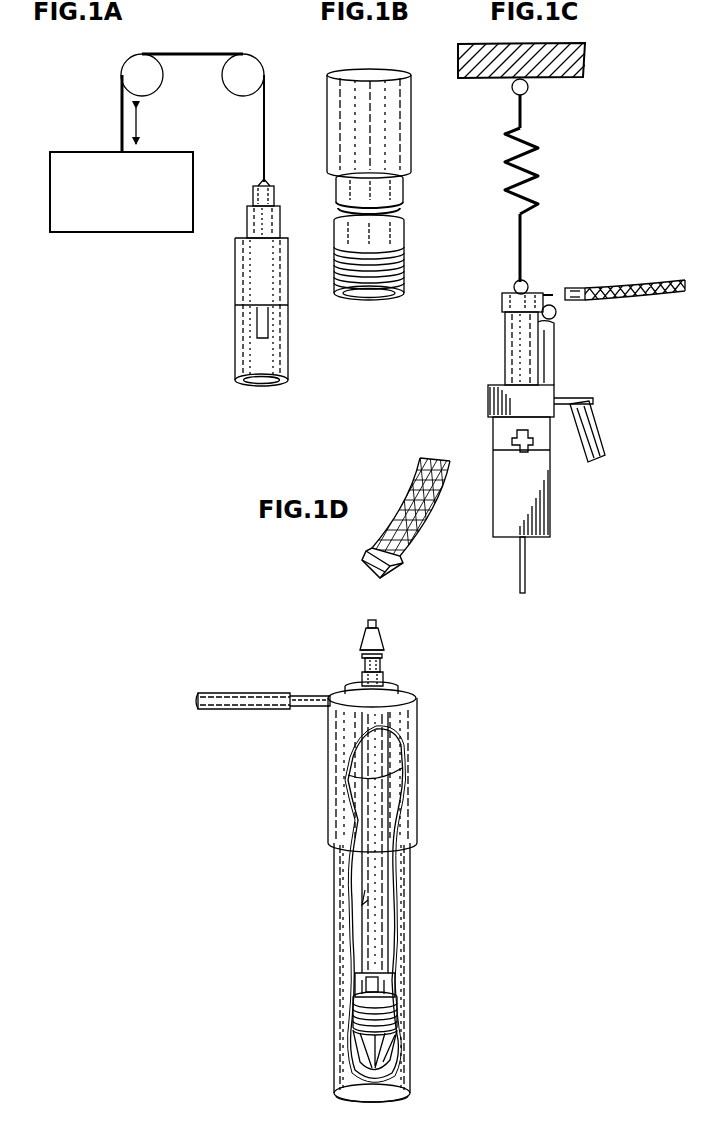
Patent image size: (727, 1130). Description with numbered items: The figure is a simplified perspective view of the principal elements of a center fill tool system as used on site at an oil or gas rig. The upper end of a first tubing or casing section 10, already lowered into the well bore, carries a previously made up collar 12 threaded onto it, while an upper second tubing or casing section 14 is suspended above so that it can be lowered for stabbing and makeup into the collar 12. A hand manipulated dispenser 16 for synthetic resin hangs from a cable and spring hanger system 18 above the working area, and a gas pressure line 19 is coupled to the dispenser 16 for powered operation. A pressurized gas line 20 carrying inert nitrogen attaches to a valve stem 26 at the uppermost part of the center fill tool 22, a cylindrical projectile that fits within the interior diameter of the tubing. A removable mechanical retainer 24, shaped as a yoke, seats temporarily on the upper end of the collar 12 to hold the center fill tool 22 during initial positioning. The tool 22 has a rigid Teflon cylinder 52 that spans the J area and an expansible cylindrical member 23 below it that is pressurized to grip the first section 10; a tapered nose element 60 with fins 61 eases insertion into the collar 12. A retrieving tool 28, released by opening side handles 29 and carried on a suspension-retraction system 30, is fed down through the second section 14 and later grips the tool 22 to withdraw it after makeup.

In FIG. 1, the first tubing or casing section 10 is at (338, 993).
In FIG. 1, the collar 12 is at (418, 824).
In FIG. 1B, the second tubing or casing section 14 is at (400, 197).
In FIG. 1C, the hand manipulated dispenser 16 is at (550, 526).
In FIG. 1C, the cable and spring hanger system 18 is at (543, 211).
In FIG. 1C, the gas pressure line 19 is at (650, 296).
In FIG. 1D, the pressurized gas line 20 is at (413, 548).
In FIG. 1, the center fill tool 22 is at (357, 907).
In FIG. 1, the expansible cylindrical member 23 is at (377, 922).
In FIG. 1, the removable mechanical retainer 24 is at (278, 711).
In FIG. 1, the valve stem 26 is at (380, 634).
In FIG. 1A, the retrieving tool 28 is at (237, 287).
In FIG. 1A, the side handles 29 is at (262, 334).
In FIG. 1A, the suspension-retraction system 30 is at (100, 233).
In FIG. 1, the Teflon cylinder 52 is at (386, 762).
In FIG. 1, the nose element 60 is at (397, 1044).
In FIG. 1, the fins 61 is at (398, 1018).